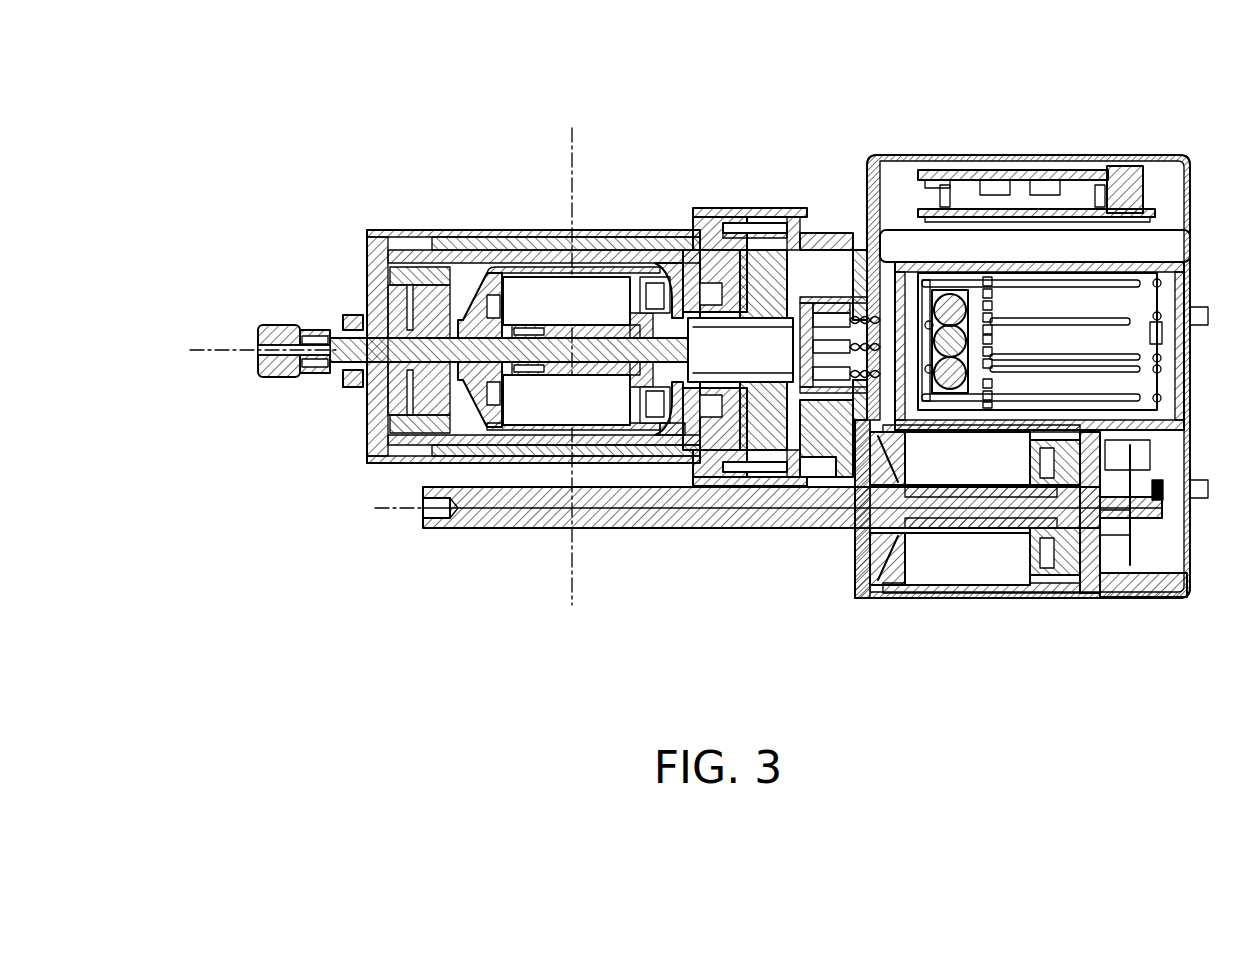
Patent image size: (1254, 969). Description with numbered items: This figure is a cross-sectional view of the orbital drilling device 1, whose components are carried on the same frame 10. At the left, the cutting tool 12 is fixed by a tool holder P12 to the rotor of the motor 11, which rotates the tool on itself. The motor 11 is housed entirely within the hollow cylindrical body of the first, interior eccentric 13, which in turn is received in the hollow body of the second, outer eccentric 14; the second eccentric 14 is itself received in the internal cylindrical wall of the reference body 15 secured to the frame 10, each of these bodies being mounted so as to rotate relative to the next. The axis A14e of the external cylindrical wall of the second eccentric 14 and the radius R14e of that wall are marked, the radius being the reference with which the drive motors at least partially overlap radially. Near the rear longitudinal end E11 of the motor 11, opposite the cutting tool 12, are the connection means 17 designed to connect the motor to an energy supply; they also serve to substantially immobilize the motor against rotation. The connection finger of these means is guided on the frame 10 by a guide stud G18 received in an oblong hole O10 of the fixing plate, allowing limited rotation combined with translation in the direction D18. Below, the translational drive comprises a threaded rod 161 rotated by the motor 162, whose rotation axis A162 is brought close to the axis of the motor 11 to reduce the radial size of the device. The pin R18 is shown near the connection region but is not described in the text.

The orbital drilling device 1 is at (870, 98).
The frame 10 is at (959, 128).
The motor 11 is at (530, 412).
The rear longitudinal end of the motor E11 is at (686, 436).
The cutting tool 12 is at (270, 394).
The tool holder P12 is at (317, 395).
The first eccentric 13 is at (679, 248).
The second eccentric 14 is at (502, 236).
The axis of the external cylindrical wall of the second eccentric A14e is at (206, 345).
The radius of the external cylindrical wall of the second eccentric R14e is at (367, 230).
The reference body 15 is at (617, 228).
The threaded rod 161 is at (516, 542).
The motor 162 is at (985, 568).
The rotation axis of the motor of the translational drive means A162 is at (366, 516).
The connection means 17 is at (831, 392).
The connector pin R18 is at (840, 302).
The guide stud G18 is at (861, 248).
The oblong hole O10 is at (851, 240).
The translation direction D18 is at (853, 614).